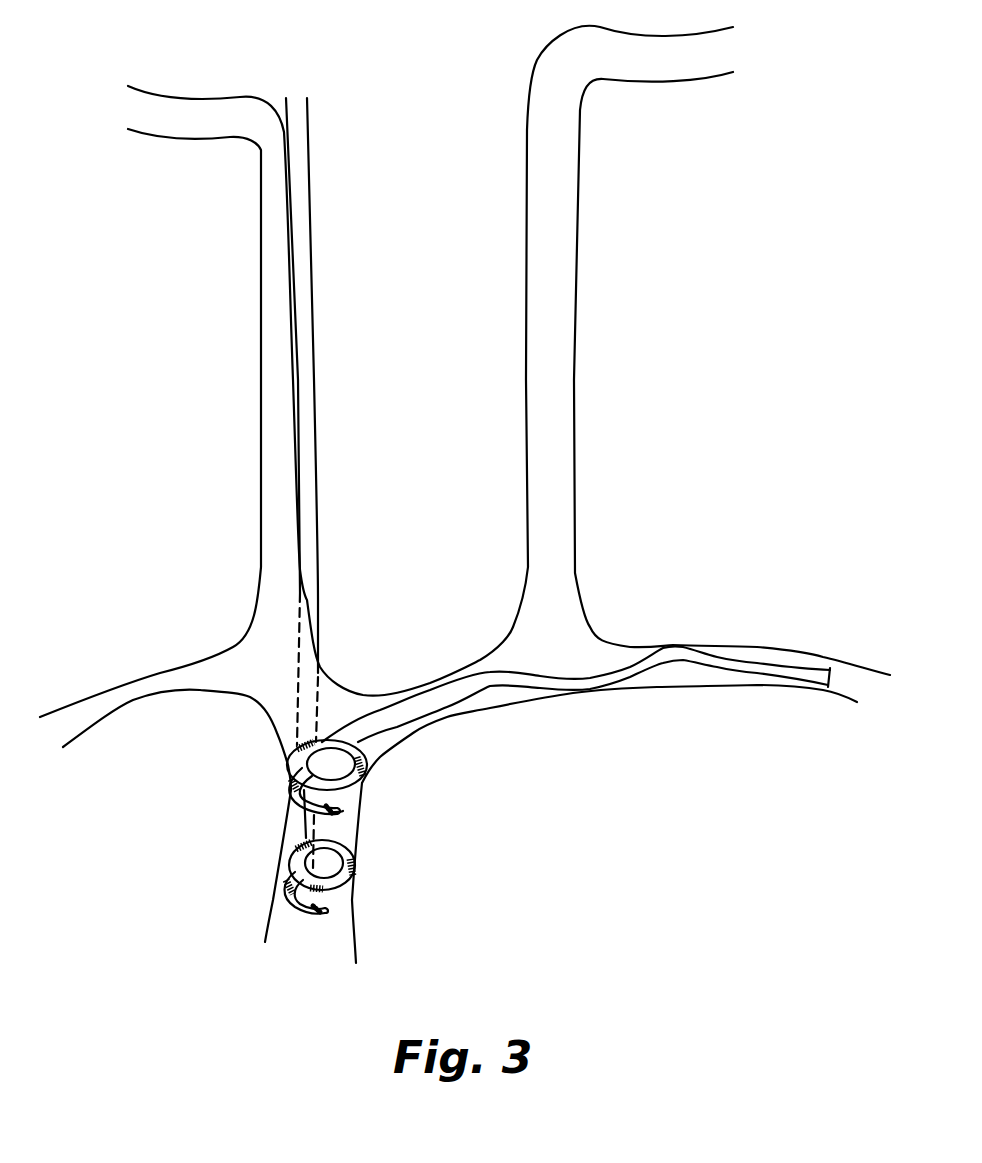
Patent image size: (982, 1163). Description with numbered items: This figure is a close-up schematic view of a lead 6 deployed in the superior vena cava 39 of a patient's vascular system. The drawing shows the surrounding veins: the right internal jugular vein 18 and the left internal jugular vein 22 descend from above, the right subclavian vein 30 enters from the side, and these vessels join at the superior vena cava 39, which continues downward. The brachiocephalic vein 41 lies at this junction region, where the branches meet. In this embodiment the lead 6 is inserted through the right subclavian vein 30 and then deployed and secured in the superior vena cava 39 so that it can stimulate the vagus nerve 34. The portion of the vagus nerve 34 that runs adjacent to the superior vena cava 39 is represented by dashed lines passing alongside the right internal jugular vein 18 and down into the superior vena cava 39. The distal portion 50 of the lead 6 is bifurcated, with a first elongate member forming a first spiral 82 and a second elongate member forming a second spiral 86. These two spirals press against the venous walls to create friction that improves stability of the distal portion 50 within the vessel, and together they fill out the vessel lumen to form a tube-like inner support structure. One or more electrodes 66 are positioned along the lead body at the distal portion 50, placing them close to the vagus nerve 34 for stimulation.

The right internal jugular vein 18 is at (265, 473).
The left internal jugular vein 22 is at (558, 419).
The right subclavian vein 30 is at (867, 670).
The superior vena cava 39 is at (340, 828).
The vagus nerve 34 is at (306, 436).
The lead 6 is at (745, 657).
The distal portion 50 is at (373, 720).
The brachiocephalic vein 41 is at (287, 743).
The first spiral 82 is at (290, 763).
The second spiral 86 is at (278, 870).
The electrodes 66 is at (332, 813).